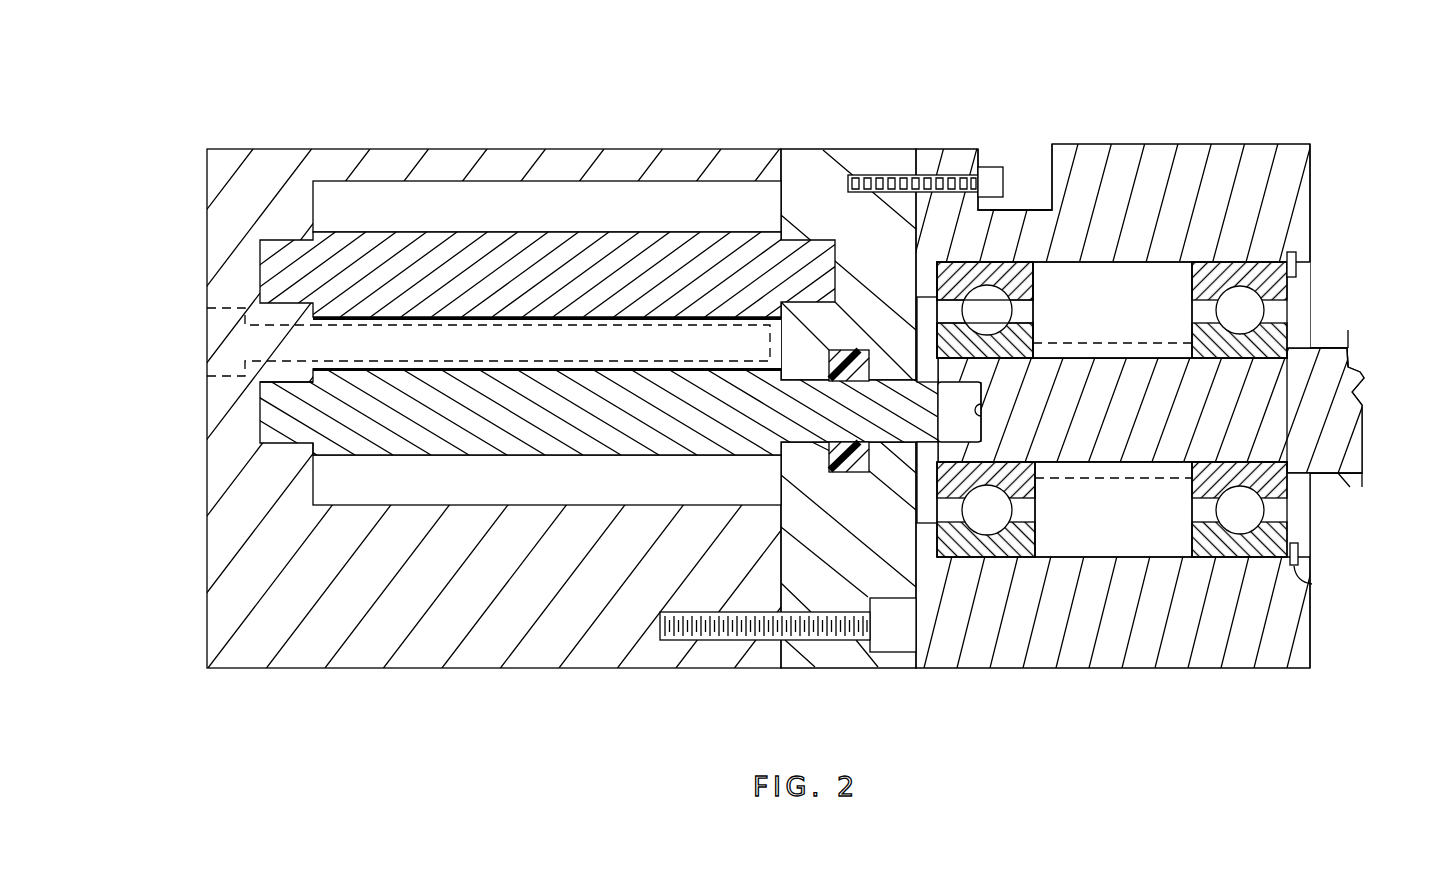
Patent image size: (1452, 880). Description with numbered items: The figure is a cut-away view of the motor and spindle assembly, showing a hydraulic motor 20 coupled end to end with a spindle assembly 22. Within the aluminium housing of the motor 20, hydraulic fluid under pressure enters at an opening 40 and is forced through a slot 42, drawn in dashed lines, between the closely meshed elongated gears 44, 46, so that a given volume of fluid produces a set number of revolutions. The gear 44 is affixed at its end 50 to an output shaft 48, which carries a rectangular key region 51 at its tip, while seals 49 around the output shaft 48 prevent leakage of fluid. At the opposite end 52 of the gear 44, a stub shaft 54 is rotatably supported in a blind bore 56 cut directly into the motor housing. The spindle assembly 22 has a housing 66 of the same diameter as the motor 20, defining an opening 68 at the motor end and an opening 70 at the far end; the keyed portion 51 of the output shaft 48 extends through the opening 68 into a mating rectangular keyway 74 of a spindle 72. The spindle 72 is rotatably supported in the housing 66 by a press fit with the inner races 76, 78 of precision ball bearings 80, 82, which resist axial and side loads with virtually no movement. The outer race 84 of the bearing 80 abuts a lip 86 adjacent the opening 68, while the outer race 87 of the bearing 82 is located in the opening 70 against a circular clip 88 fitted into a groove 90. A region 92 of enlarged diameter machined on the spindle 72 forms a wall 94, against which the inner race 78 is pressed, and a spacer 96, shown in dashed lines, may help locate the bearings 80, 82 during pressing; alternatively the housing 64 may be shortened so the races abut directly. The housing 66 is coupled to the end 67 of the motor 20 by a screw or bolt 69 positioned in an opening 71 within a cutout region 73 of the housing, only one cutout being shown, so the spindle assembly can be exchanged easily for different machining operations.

The motor 20 is at (420, 112).
The spindle assembly 22 is at (1043, 84).
The opening 40 is at (245, 309).
The slot 42 is at (512, 330).
The elongated gear 44 is at (306, 497).
The elongated gear 46 is at (360, 210).
The output shaft 48 is at (903, 417).
The seal 49 is at (851, 364).
The end 50 is at (661, 612).
The key region 51 is at (971, 426).
The end 52 is at (316, 483).
The stub shaft 54 is at (305, 404).
The blind bore 56 is at (277, 437).
The housing 64 is at (1346, 190).
The housing 66 is at (1312, 150).
The end 67 is at (822, 162).
The opening 68 is at (927, 504).
The screw or bolt 69 is at (987, 165).
The opening 70 is at (1294, 501).
The opening 71 is at (875, 175).
The spindle 72 is at (1146, 423).
The cutout region 73 is at (1029, 160).
The keyway 74 is at (987, 409).
The inner race 76 is at (1060, 334).
The inner race 78 is at (1192, 489).
The ball bearing 80 is at (1055, 308).
The ball bearing 82 is at (1308, 309).
The outer race 84 is at (1037, 286).
The lip 86 is at (947, 272).
The outer race 87 is at (1300, 269).
The circular clip 88 is at (1299, 553).
The groove 90 is at (1312, 584).
The region of enlarged diameter 92 is at (1330, 477).
The wall 94 is at (1287, 461).
The spacer 96 is at (1044, 480).